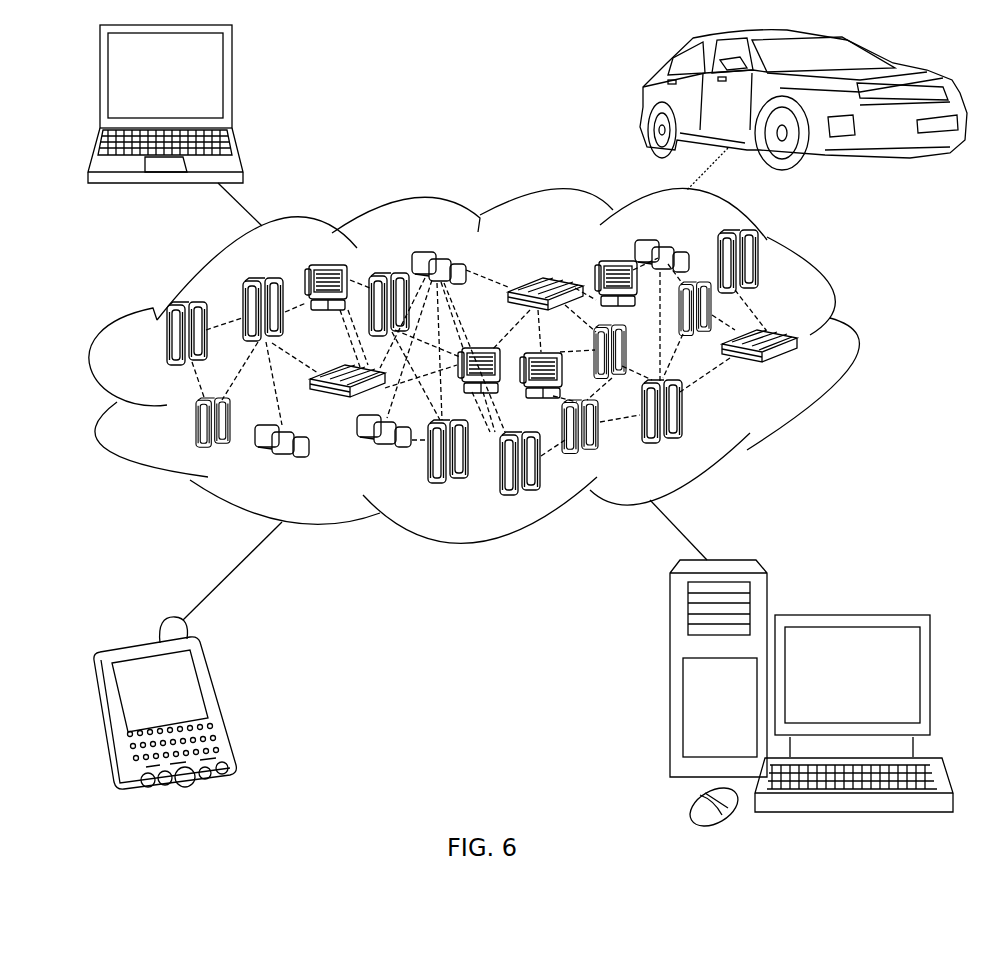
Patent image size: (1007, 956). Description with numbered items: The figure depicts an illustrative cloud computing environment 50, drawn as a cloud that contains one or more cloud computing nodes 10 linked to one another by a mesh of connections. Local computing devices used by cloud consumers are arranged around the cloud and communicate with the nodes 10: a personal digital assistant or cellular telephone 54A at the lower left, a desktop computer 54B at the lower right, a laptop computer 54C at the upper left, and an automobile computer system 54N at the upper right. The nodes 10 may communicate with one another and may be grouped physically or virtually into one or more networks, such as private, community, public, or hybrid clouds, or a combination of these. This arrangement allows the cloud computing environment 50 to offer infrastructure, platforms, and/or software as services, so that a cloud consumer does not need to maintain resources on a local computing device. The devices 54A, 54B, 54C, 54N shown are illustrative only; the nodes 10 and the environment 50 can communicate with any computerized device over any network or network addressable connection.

The cloud computing nodes 10 is at (797, 371).
The cloud computing environment 50 is at (848, 345).
The personal digital assistant or cellular telephone 54A is at (222, 700).
The desktop computer 54B is at (850, 614).
The laptop computer 54C is at (232, 85).
The automobile computer system 54N is at (642, 100).